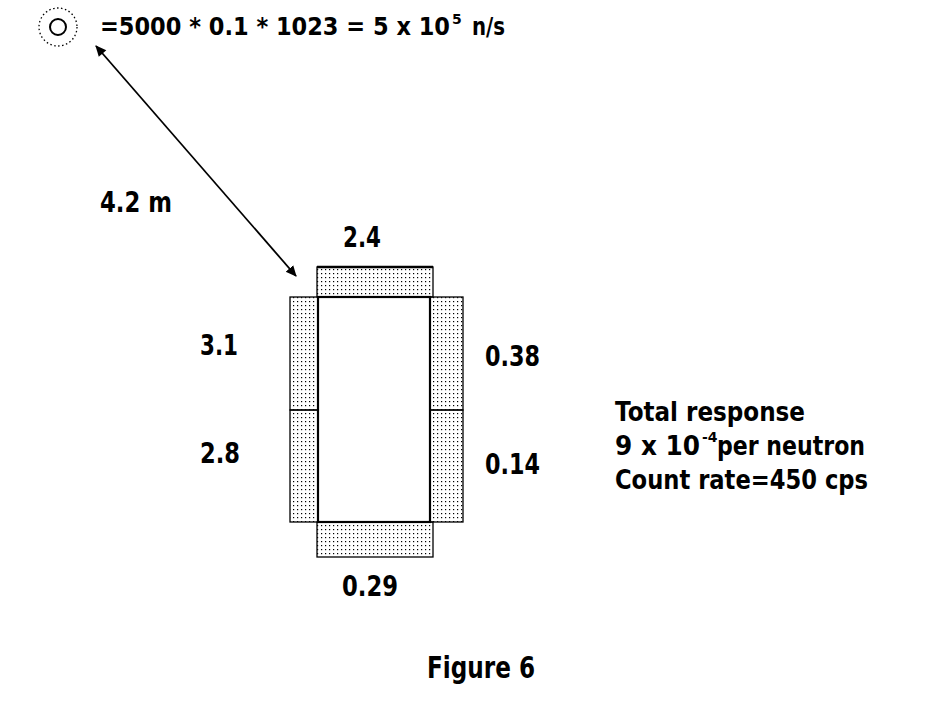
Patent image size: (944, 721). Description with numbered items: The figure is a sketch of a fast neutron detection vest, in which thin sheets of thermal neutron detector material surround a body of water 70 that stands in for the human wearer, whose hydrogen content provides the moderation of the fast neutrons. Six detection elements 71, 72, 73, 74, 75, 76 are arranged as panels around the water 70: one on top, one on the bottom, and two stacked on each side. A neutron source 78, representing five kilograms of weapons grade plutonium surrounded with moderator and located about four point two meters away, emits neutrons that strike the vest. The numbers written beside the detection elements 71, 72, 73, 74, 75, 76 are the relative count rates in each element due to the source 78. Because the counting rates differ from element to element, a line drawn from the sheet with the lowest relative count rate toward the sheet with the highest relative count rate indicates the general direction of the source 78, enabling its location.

The water 70 is at (400, 497).
The detection element 71 is at (288, 318).
The detection element 72 is at (412, 266).
The detection element 73 is at (472, 318).
The detection element 74 is at (465, 488).
The detection element 75 is at (317, 539).
The detection element 76 is at (288, 471).
The source 78 is at (52, 47).